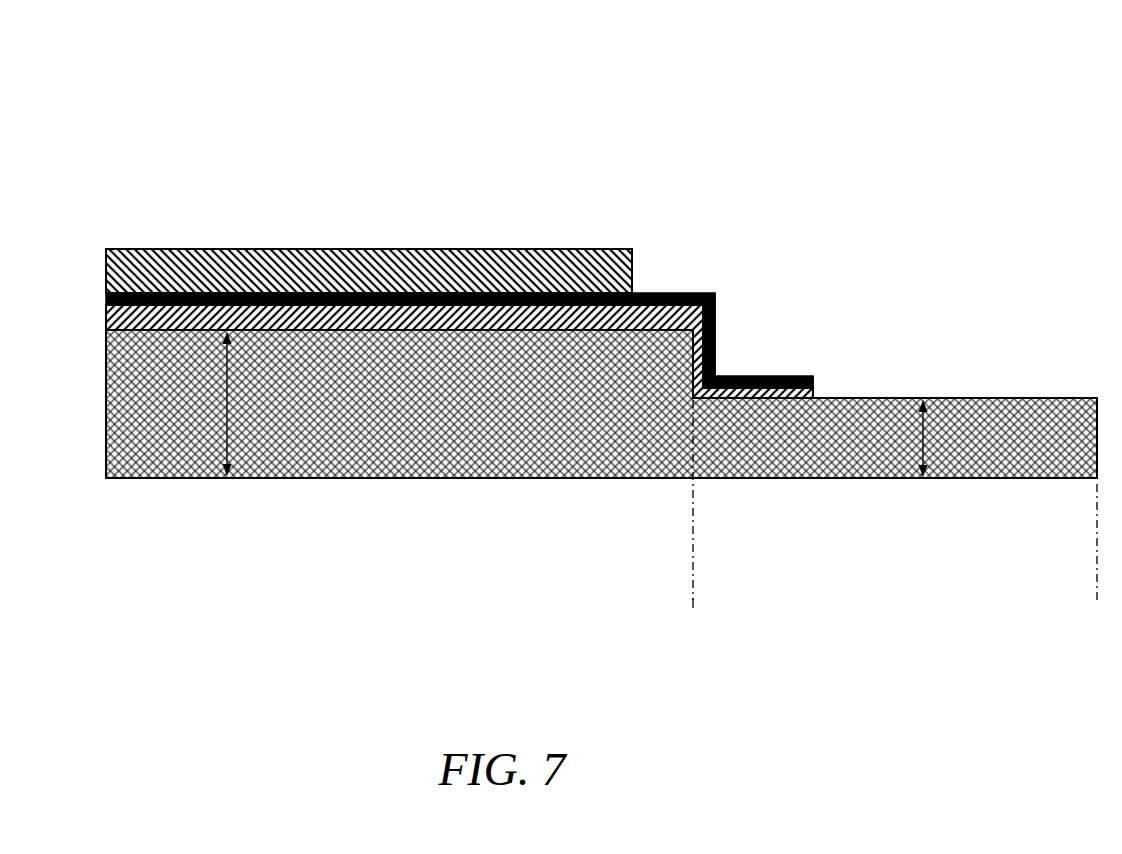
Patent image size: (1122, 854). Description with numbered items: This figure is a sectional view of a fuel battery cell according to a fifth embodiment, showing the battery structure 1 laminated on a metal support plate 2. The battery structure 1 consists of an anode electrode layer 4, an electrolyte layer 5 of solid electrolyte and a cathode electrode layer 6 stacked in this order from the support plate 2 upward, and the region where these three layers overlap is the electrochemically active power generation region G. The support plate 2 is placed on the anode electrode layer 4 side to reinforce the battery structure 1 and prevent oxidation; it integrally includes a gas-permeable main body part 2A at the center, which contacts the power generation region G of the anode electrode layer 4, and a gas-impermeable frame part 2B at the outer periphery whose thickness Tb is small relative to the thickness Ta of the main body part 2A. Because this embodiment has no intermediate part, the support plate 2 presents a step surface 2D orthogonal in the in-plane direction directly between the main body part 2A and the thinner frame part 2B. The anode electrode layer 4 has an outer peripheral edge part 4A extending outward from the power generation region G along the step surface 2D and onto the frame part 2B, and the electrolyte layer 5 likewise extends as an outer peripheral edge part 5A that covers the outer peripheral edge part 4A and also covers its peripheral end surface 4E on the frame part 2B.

The battery structure 1 is at (459, 201).
The support plate 2 is at (362, 467).
The main body part 2A is at (108, 588).
The frame part 2B is at (693, 608).
The step surface 2D is at (690, 374).
The anode electrode layer 4 is at (430, 322).
The outer peripheral edge part 4A is at (737, 398).
The peripheral end surface 4E is at (763, 398).
The electrolyte layer 5 is at (500, 298).
The outer peripheral edge part 5A is at (710, 292).
The cathode electrode layer 6 is at (581, 249).
The power generation region G is at (110, 208).
The thickness of the main body part Ta is at (227, 402).
The thickness of the frame part Tb is at (923, 440).